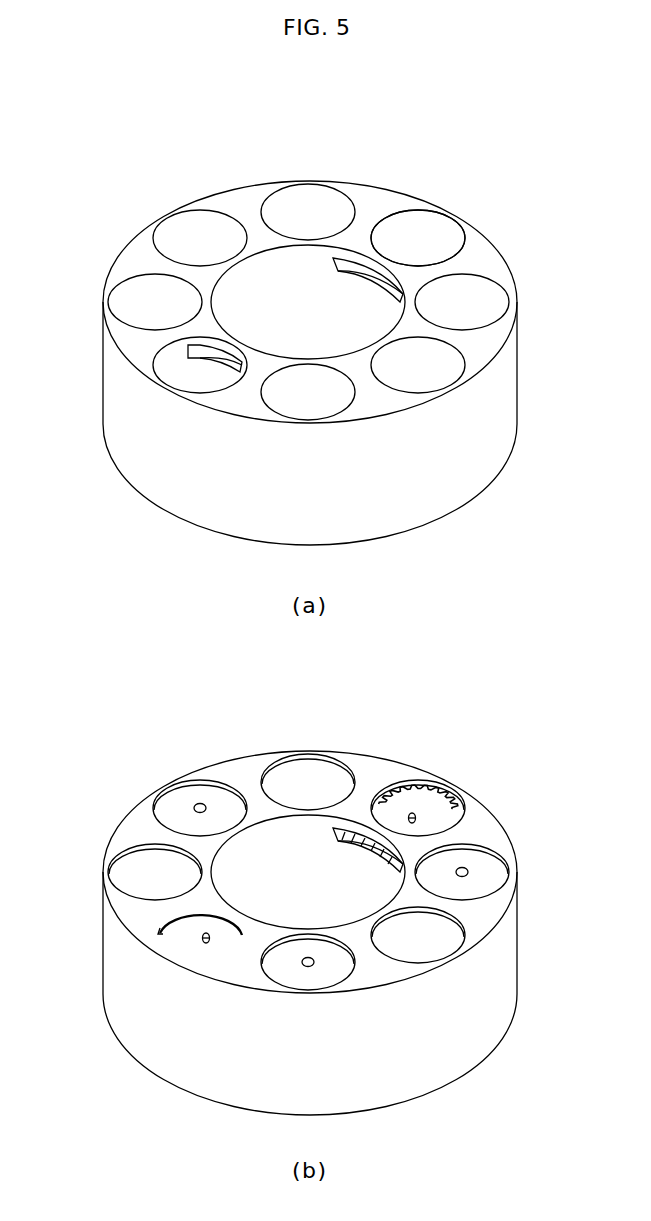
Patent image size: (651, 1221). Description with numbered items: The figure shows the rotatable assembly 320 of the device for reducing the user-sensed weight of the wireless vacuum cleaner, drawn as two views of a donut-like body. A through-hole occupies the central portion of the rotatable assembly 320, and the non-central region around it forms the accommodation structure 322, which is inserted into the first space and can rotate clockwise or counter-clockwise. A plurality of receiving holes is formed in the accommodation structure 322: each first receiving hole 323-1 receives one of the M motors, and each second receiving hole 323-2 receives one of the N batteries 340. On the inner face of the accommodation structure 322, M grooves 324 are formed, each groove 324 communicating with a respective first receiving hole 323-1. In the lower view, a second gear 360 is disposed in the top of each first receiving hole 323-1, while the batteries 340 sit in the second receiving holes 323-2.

The rotatable assembly 320 is at (148, 102).
The accommodation structure 322 is at (383, 768).
The first receiving hole 323-1 is at (425, 232).
The second receiving hole 323-2 is at (204, 235).
The groove 324 is at (352, 265).
The battery 340 is at (199, 792).
The second gear 360 is at (187, 947).